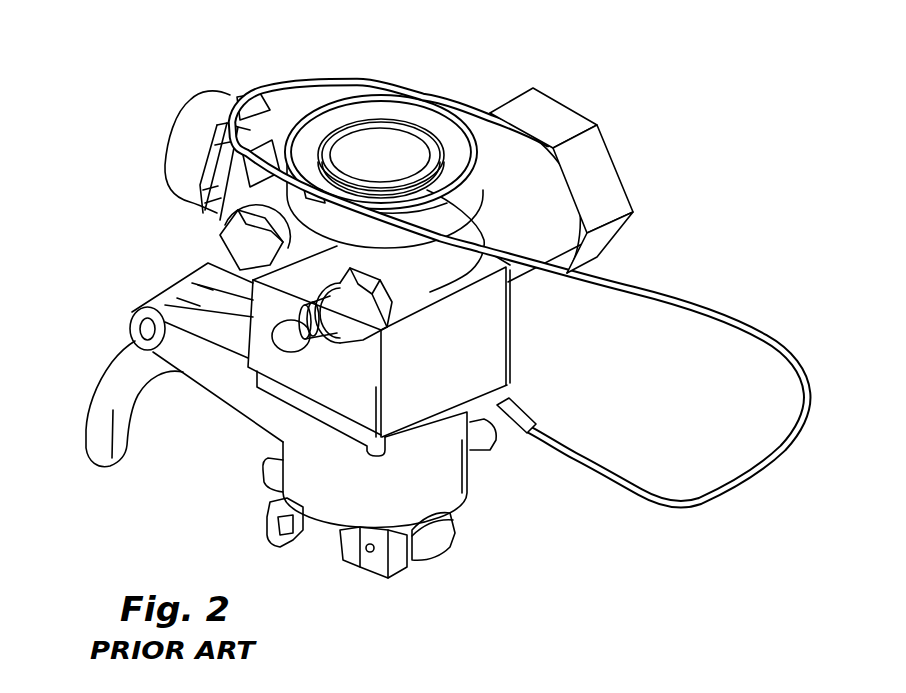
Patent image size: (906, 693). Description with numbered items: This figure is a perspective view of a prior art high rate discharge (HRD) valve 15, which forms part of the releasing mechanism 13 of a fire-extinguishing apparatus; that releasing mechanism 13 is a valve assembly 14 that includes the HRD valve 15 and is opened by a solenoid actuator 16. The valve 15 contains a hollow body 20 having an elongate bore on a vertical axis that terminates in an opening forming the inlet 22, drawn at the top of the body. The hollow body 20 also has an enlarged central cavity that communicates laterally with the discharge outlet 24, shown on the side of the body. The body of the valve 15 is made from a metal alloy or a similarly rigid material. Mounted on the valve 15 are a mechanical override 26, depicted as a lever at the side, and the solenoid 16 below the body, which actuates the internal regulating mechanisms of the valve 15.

The releasing mechanism 13 is at (422, 313).
The valve assembly 14 is at (329, 420).
The high rate discharge (HRD) valve 15 is at (487, 347).
The solenoid actuator 16 is at (450, 488).
The hollow body 20 is at (490, 298).
The inlet 22 is at (388, 150).
The discharge outlet 24 is at (607, 138).
The mechanical override 26 is at (85, 422).